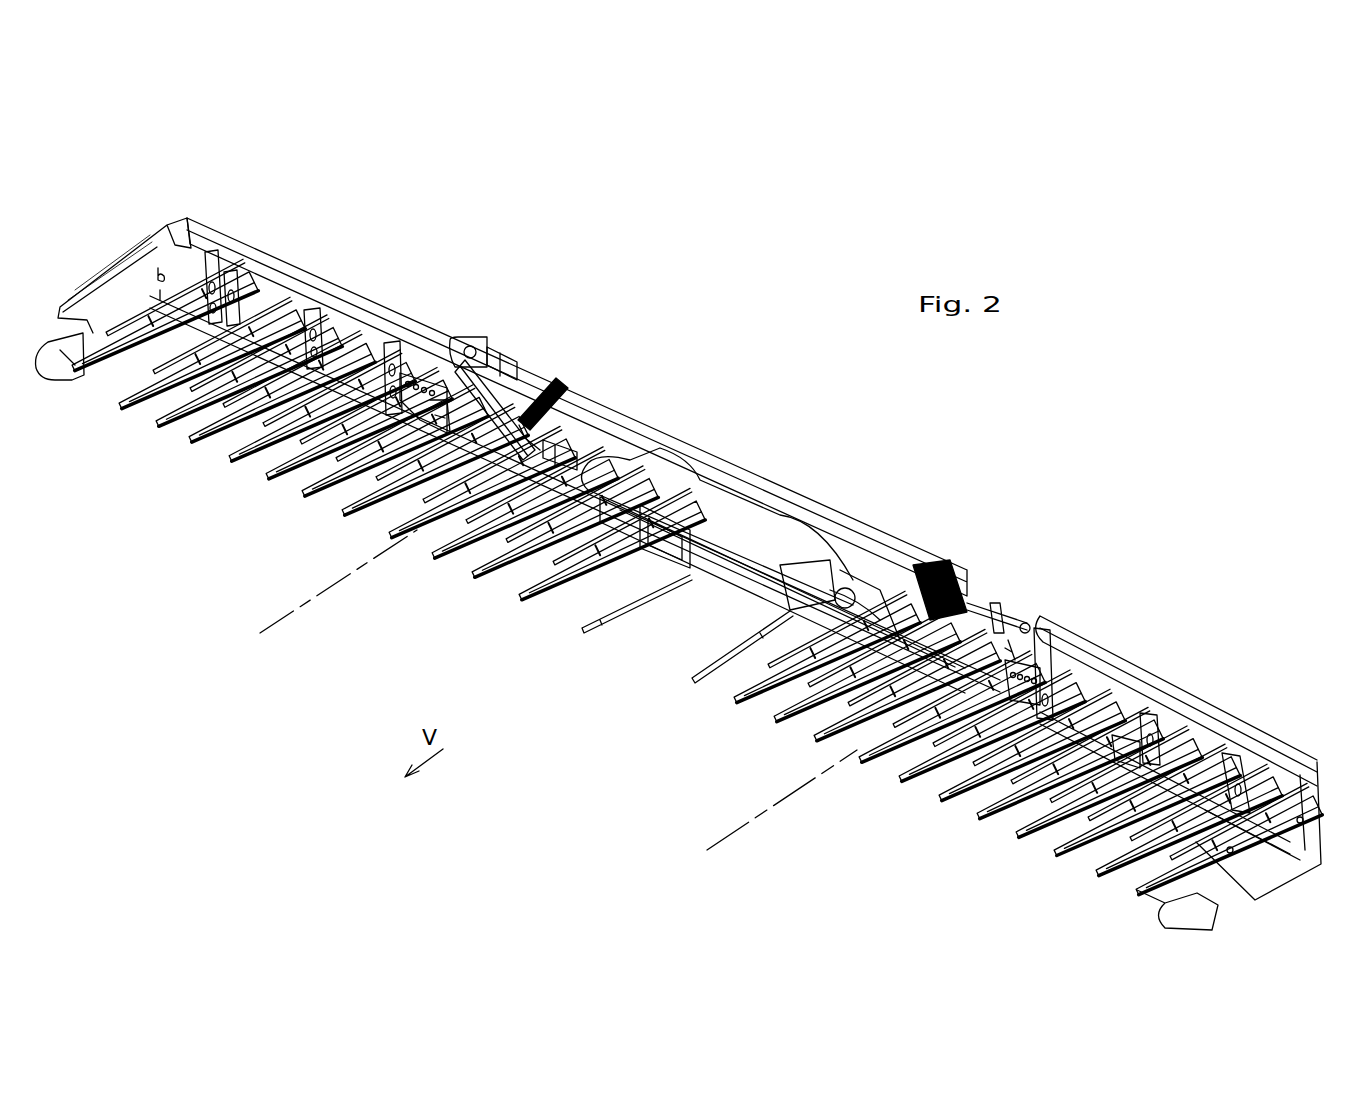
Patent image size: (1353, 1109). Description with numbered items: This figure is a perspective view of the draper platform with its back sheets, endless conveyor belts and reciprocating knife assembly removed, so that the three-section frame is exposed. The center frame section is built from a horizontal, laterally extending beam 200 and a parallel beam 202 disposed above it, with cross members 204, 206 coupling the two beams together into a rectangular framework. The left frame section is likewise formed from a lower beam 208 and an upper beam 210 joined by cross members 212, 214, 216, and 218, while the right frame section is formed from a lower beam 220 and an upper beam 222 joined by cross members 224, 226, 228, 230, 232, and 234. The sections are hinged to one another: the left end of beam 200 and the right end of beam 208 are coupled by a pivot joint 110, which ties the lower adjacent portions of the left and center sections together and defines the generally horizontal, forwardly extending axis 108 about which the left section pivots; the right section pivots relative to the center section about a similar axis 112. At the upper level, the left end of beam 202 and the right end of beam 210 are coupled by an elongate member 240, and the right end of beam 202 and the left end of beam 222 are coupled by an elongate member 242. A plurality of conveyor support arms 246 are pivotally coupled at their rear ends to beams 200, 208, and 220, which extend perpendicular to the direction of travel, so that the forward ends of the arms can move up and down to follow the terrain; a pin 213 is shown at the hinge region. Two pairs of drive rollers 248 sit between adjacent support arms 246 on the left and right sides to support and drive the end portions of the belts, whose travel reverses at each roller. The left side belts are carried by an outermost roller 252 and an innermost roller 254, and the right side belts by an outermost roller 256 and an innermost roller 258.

The axis 108 is at (715, 840).
The pivot joint 110 is at (1031, 581).
The axis 112 is at (287, 620).
The beam 200 is at (733, 565).
The beam 202 is at (727, 468).
The cross member 204 is at (922, 560).
The cross member 206 is at (577, 430).
The beam 208 is at (1128, 738).
The beam 210 is at (1212, 712).
The cross member 212 is at (1048, 665).
The pivot pin 213 is at (1013, 648).
The cross member 214 is at (1113, 745).
The cross member 216 is at (1182, 700).
The cross member 218 is at (1225, 762).
The beam 220 is at (367, 357).
The beam 222 is at (280, 267).
The cross member 224 is at (207, 262).
The cross member 226 is at (322, 320).
The cross member 228 is at (407, 343).
The cross member 230 is at (433, 353).
The cross member 232 is at (460, 360).
The cross member 234 is at (548, 395).
The elongate member 240 is at (990, 600).
The elongate member 242 is at (528, 375).
The conveyor support arm 246 is at (155, 420).
The drive rollers 248 is at (230, 458).
The outermost roller 252 is at (1160, 903).
The innermost roller 254 is at (703, 680).
The outermost roller 256 is at (80, 383).
The innermost roller 258 is at (587, 623).